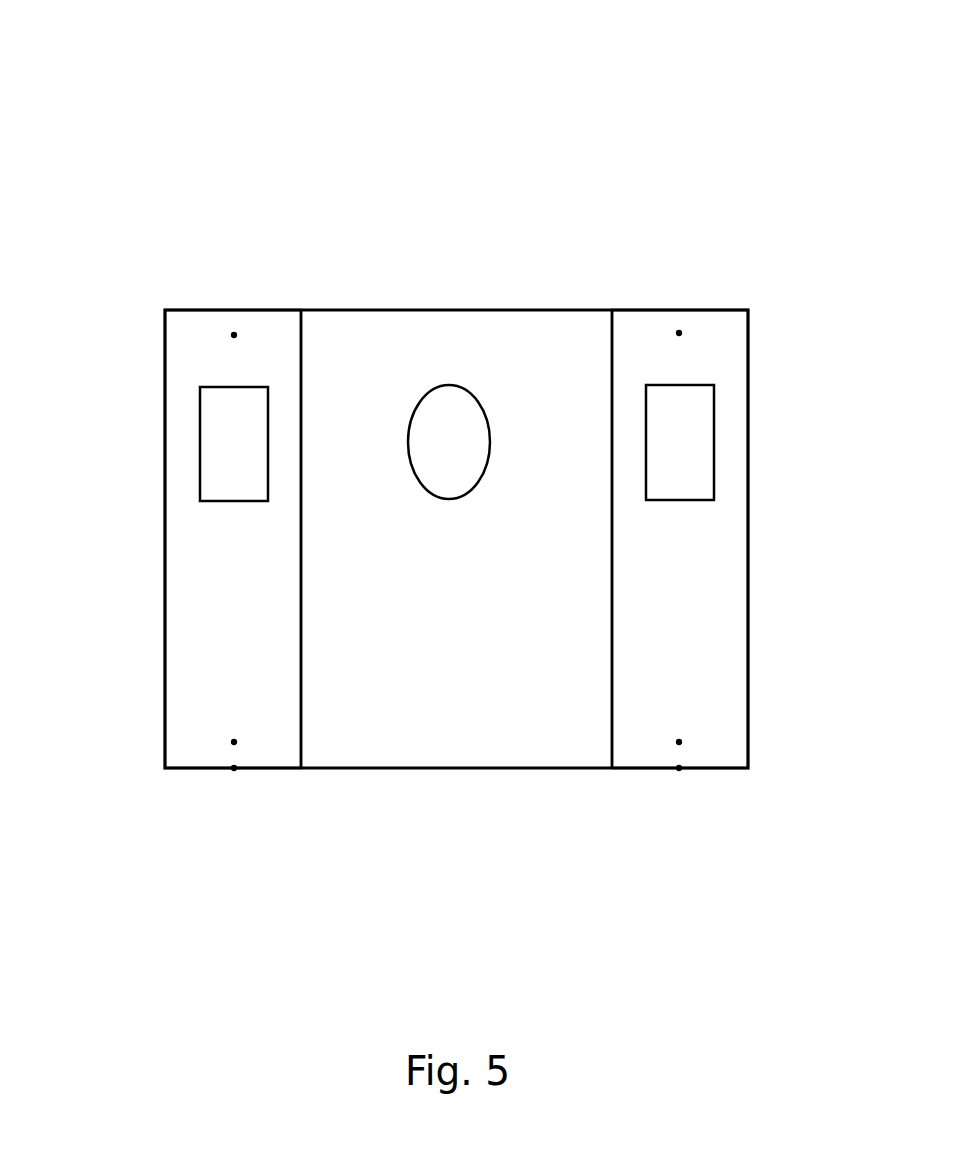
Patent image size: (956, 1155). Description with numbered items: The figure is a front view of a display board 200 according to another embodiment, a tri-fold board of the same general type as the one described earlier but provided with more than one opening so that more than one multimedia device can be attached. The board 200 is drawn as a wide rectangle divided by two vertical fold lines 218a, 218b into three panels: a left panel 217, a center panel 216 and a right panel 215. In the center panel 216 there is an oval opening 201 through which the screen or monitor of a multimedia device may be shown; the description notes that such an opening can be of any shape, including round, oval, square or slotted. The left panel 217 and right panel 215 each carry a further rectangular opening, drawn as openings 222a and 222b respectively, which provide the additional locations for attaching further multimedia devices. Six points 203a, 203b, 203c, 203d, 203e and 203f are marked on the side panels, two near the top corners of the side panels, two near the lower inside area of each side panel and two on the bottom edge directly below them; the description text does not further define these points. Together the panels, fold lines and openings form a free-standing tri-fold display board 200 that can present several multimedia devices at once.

The display board 200 is at (148, 167).
The opening 201 is at (453, 405).
The alignment point 203a is at (679, 333).
The alignment point 203b is at (679, 742).
The alignment point 203c is at (679, 770).
The alignment point 203d is at (234, 770).
The alignment point 203e is at (234, 742).
The alignment point 203f is at (234, 335).
The right side portion 215 is at (682, 623).
The central portion 216 is at (450, 743).
The left side portion 217 is at (217, 630).
The left fold line 218a is at (300, 308).
The right fold line 218b is at (612, 308).
The left window / cutout 222a is at (233, 449).
The right window / cutout 222b is at (682, 436).